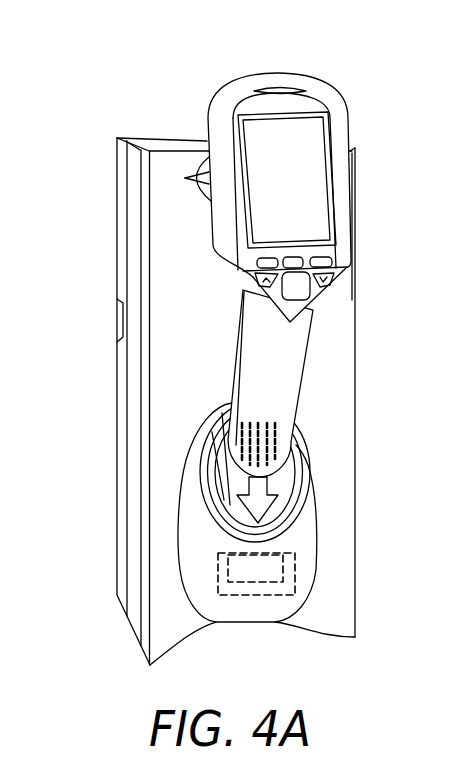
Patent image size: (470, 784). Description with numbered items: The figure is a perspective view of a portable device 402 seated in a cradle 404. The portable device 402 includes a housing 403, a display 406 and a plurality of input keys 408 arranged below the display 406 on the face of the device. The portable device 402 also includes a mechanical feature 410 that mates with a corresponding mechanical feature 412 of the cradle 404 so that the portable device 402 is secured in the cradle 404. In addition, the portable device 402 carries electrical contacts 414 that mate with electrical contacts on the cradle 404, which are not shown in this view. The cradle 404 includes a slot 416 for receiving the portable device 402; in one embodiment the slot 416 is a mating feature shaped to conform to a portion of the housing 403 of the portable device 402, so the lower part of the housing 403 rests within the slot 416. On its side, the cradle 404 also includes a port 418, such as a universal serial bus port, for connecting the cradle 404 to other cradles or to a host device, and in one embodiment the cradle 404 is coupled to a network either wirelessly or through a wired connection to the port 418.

The portable device 402 is at (270, 73).
The housing 403 is at (232, 360).
The cradle 404 is at (117, 216).
The display 406 is at (320, 222).
The input keys 408 is at (250, 275).
The mechanical feature 410 is at (221, 421).
The mechanical feature of the cradle 412 is at (218, 563).
The electrical contacts 414 is at (267, 420).
The slot 416 is at (292, 457).
The port 418 is at (118, 320).